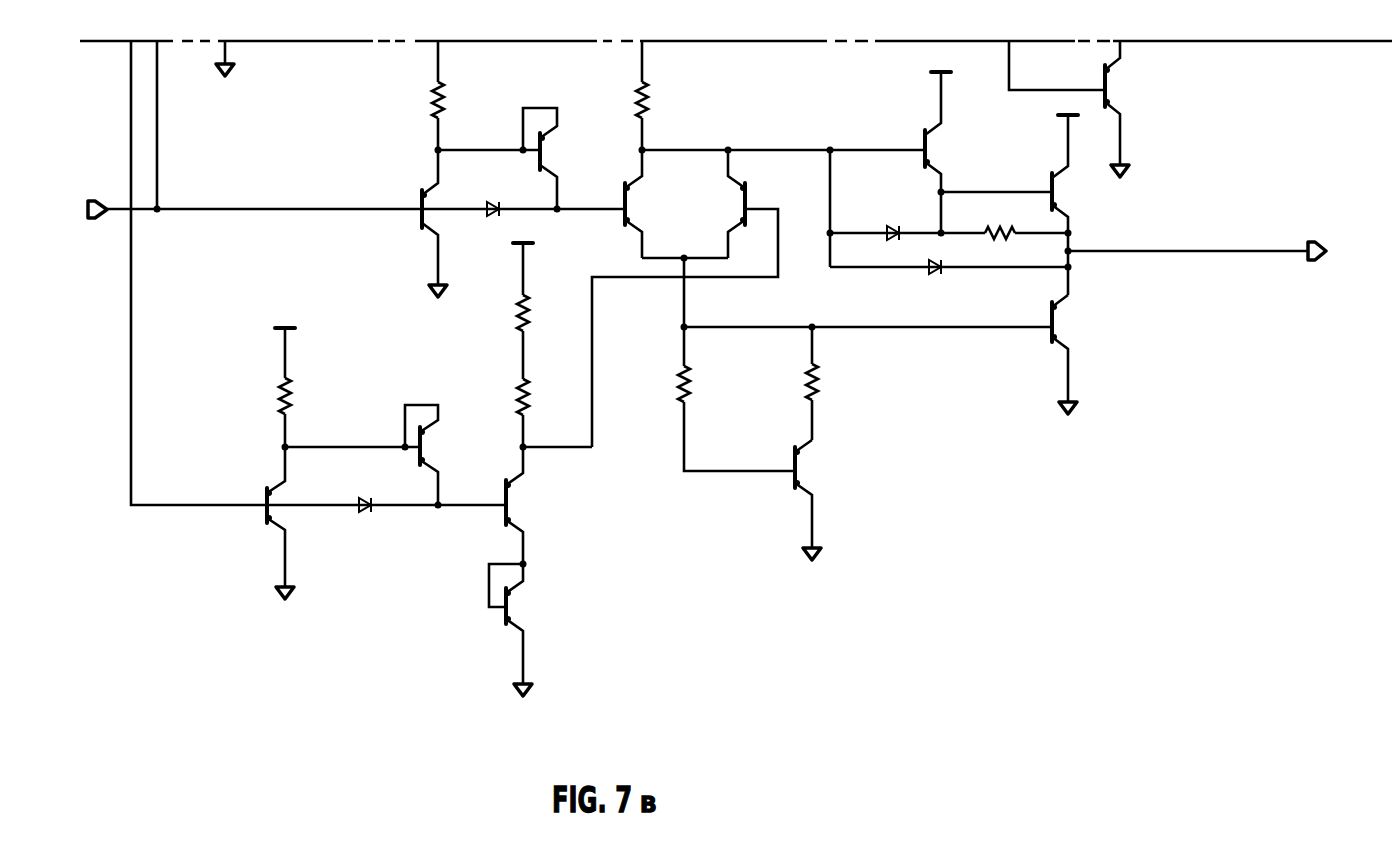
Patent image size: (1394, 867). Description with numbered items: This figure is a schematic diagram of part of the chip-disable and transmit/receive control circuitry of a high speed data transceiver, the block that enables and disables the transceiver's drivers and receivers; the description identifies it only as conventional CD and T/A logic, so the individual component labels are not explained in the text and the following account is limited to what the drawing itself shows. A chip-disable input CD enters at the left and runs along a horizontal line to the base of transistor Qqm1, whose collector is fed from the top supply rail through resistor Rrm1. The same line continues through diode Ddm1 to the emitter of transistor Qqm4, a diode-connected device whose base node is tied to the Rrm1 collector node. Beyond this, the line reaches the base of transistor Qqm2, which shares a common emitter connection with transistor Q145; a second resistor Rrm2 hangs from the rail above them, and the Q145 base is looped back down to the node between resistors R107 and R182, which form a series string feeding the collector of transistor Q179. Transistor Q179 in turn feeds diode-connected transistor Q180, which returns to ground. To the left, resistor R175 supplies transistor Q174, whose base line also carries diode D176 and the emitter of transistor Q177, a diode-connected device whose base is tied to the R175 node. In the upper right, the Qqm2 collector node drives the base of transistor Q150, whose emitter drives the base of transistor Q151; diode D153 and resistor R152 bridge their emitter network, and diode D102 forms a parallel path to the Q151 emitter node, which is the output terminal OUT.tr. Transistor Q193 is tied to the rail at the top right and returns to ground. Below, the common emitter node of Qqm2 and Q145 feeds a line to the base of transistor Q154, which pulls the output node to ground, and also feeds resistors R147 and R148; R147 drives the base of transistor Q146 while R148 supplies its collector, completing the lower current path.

The CD input terminal CD is at (84, 211).
The resistor Rrm1 is at (463, 95).
The transistor Qqm1 is at (457, 223).
The diode Ddm1 is at (523, 194).
The transistor Qqm4 is at (564, 158).
The resistor Rrm2 is at (671, 95).
The transistor Qqm2 is at (659, 204).
The transistor Q145 is at (685, 298).
The transistor Q150 is at (952, 152).
The transistor Q151 is at (1076, 174).
The transistor Q193 is at (1088, 109).
The diode D153 is at (907, 220).
The resistor R152 is at (1024, 219).
The diode D102 is at (949, 283).
The OUT.tr output terminal OUT.tr is at (1228, 252).
The transistor Q154 is at (1076, 354).
The resistor R147 is at (736, 399).
The resistor R148 is at (838, 383).
The transistor Q146 is at (822, 500).
The resistor R107 is at (546, 311).
The resistor R182 is at (547, 413).
The transistor Q179 is at (497, 505).
The transistor Q180 is at (523, 630).
The resistor R175 is at (307, 387).
The transistor Q174 is at (297, 523).
The diode D176 is at (352, 492).
The transistor Q177 is at (438, 455).